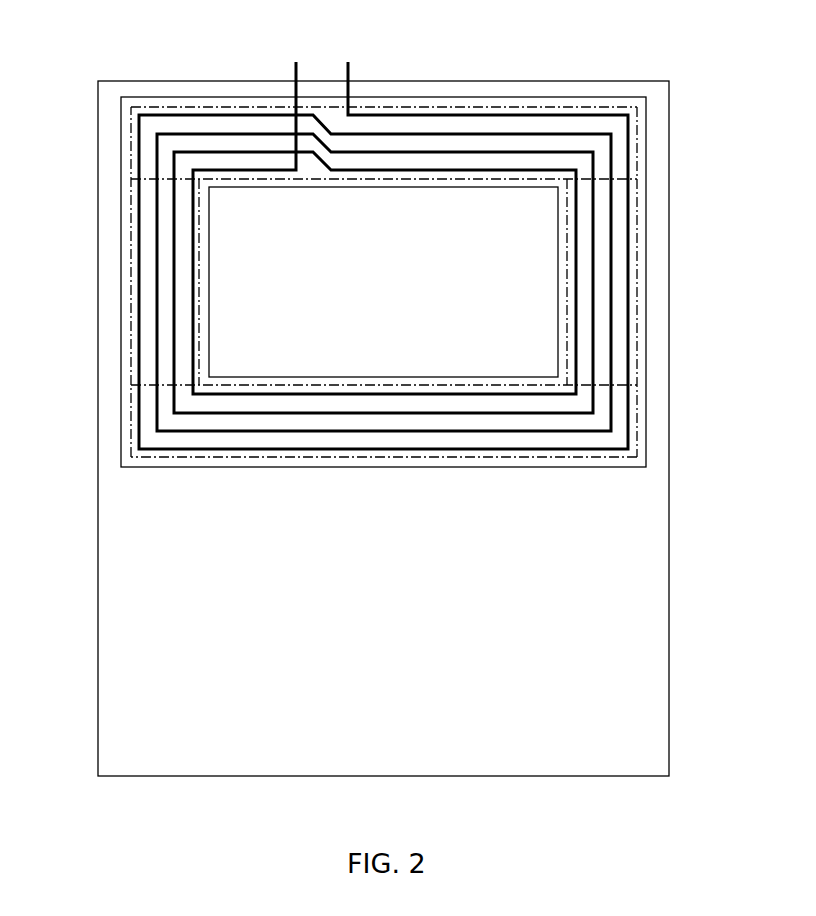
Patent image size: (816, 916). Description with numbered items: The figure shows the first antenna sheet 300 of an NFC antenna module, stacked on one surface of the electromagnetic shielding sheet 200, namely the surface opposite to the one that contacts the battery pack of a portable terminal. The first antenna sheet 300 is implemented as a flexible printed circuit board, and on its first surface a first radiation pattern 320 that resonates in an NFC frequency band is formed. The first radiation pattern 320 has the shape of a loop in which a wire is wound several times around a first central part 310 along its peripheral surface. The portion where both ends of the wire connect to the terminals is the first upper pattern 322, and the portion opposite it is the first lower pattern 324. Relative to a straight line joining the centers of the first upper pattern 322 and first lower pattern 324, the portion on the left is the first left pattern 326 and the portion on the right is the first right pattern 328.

The electromagnetic shielding sheet 200 is at (97, 414).
The first antenna sheet 300 is at (502, 98).
The first central part 310 is at (247, 205).
The first radiation pattern 320 is at (630, 328).
The first upper pattern 322 is at (402, 107).
The first lower pattern 324 is at (638, 421).
The first left pattern 326 is at (131, 287).
The first right pattern 328 is at (640, 282).